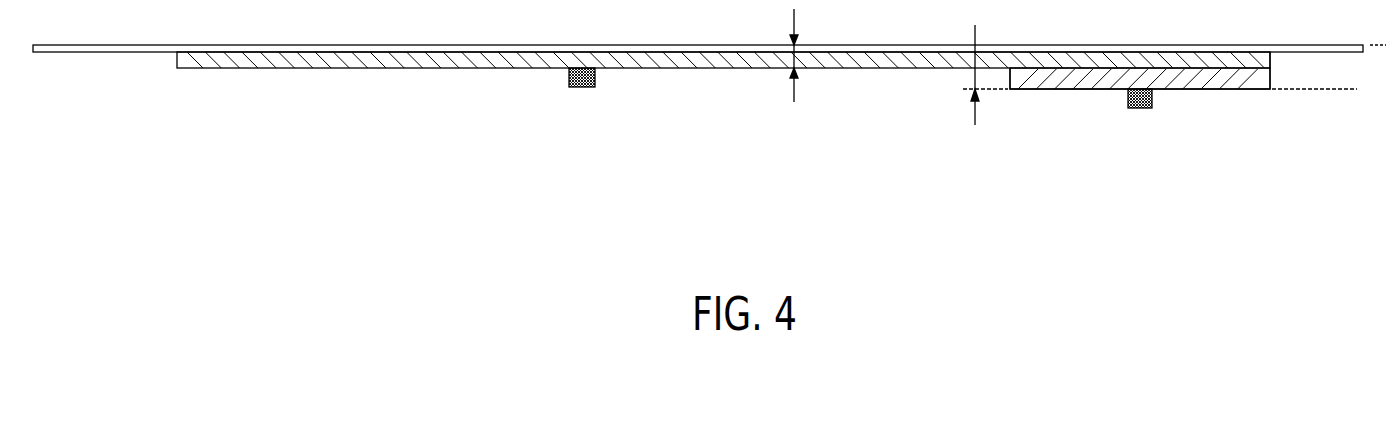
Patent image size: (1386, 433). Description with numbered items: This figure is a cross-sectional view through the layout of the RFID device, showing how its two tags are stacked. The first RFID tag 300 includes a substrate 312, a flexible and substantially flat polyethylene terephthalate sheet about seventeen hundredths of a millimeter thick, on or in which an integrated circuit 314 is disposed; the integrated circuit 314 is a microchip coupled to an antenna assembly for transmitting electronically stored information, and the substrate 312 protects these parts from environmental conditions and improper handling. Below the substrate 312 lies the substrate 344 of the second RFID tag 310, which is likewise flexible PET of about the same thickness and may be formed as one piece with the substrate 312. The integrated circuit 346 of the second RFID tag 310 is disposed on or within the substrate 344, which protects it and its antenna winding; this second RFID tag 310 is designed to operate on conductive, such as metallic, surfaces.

The first RFID tag 300 is at (177, 68).
The second RFID tag 310 is at (1046, 83).
The substrate 312 is at (285, 68).
The integrated circuit 314 is at (583, 87).
The substrate 344 is at (1252, 80).
The integrated circuit 346 is at (1142, 108).